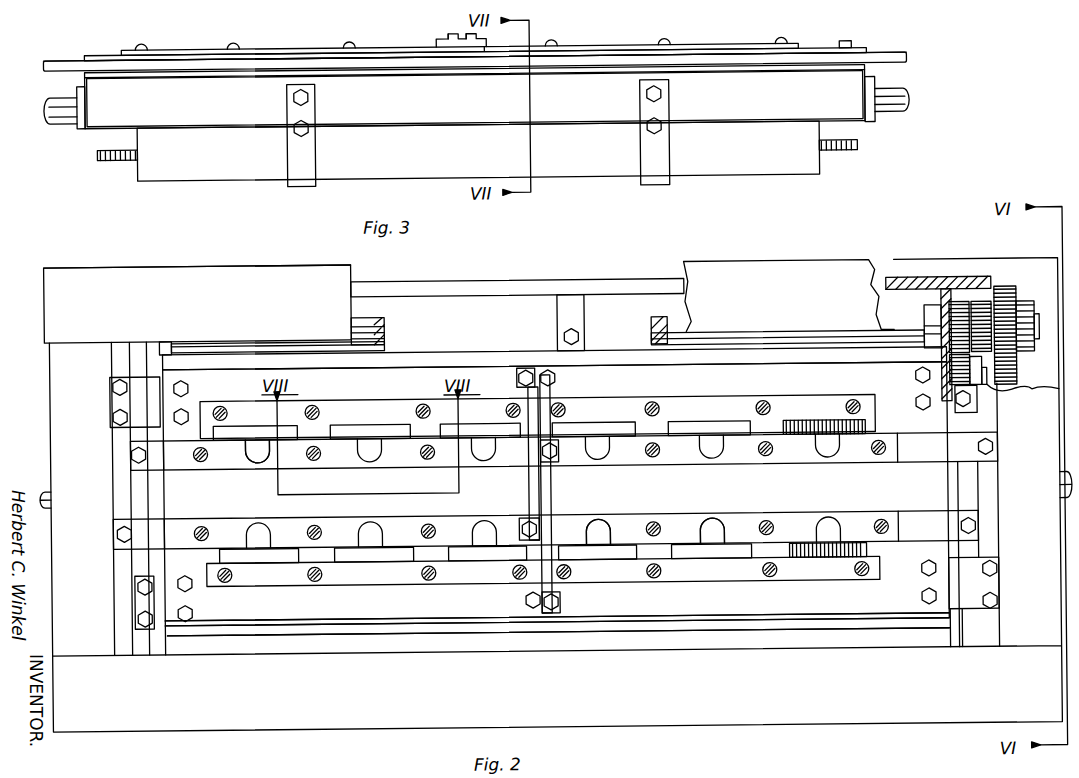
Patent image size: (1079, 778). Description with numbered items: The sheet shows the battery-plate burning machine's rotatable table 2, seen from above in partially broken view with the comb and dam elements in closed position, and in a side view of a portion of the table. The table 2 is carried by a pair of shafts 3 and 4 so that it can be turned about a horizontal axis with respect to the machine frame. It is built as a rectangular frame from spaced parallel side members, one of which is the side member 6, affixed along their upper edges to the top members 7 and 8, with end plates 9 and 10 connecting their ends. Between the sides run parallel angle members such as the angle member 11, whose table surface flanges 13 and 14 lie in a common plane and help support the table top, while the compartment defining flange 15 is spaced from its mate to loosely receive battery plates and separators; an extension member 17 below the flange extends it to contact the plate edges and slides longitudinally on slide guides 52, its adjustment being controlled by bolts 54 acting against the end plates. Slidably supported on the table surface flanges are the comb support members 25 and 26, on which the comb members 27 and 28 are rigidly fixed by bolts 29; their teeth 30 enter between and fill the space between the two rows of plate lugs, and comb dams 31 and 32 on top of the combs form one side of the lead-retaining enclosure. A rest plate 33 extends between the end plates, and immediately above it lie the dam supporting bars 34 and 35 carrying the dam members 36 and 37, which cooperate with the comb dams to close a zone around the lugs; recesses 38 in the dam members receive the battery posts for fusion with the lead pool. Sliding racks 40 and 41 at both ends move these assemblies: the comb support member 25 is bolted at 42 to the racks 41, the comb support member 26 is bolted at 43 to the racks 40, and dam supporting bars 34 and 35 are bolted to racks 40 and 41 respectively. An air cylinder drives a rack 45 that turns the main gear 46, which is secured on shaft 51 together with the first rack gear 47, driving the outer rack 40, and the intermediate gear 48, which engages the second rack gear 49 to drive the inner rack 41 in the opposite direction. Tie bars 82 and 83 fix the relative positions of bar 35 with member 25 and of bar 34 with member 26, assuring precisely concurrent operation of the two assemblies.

In FIG. 3, the table 2 is at (170, 182).
In FIG. 2, the table 2 is at (44, 293).
In FIG. 3, the shaft 3 is at (888, 112).
In FIG. 2, the shaft 3 is at (1060, 482).
In FIG. 3, the shaft 4 is at (60, 123).
In FIG. 2, the shaft 4 is at (42, 486).
In FIG. 2, the side member 6 is at (558, 292).
In FIG. 2, the top member 7 is at (348, 716).
In FIG. 2, the top member 8 is at (236, 280).
In FIG. 2, the end plate 9 is at (957, 643).
In FIG. 2, the end plate 10 is at (157, 650).
In FIG. 3, the angle member 11 is at (92, 128).
In FIG. 3, the table surface flange 13 is at (208, 69).
In FIG. 2, the table surface flange 14 is at (500, 362).
In FIG. 3, the compartment defining flange 15 is at (404, 108).
In FIG. 3, the extension member 17 is at (408, 158).
In FIG. 2, the comb support member 25 is at (972, 388).
In FIG. 3, the comb support member 26 is at (900, 57).
In FIG. 2, the comb support member 26 is at (967, 606).
In FIG. 2, the comb member 27 is at (648, 382).
In FIG. 3, the comb member 28 is at (836, 50).
In FIG. 2, the comb member 28 is at (798, 604).
In FIG. 2, the bolt 29 is at (918, 402).
In FIG. 2, the teeth 30 is at (852, 440).
In FIG. 2, the comb dam 31 is at (803, 412).
In FIG. 3, the comb dam 32 is at (765, 44).
In FIG. 2, the comb dam 32 is at (700, 574).
In FIG. 2, the rest plate 33 is at (229, 497).
In FIG. 2, the dam supporting bar 34 is at (970, 454).
In FIG. 2, the dam supporting bar 35 is at (930, 525).
In FIG. 2, the dam member 36 is at (800, 453).
In FIG. 2, the dam member 37 is at (747, 527).
In FIG. 2, the recess 38 is at (612, 528).
In FIG. 2, the outer rack 40 is at (138, 486).
In FIG. 2, the inner rack 41 is at (120, 563).
In FIG. 2, the bolt 42 is at (118, 408).
In FIG. 2, the bolt 43 is at (135, 583).
In FIG. 2, the rack 45 is at (1003, 378).
In FIG. 2, the main gear 46 is at (1003, 292).
In FIG. 2, the first rack gear 47 is at (982, 305).
In FIG. 2, the intermediate gear 48 is at (957, 305).
In FIG. 2, the second rack gear 49 is at (962, 377).
In FIG. 2, the shaft 51 is at (680, 312).
In FIG. 3, the slide guide 52 is at (305, 178).
In FIG. 3, the bolt 54 is at (126, 158).
In FIG. 3, the tie bar 82 is at (452, 41).
In FIG. 2, the tie bar 82 is at (527, 480).
In FIG. 3, the tie bar 83 is at (488, 50).
In FIG. 2, the tie bar 83 is at (545, 502).